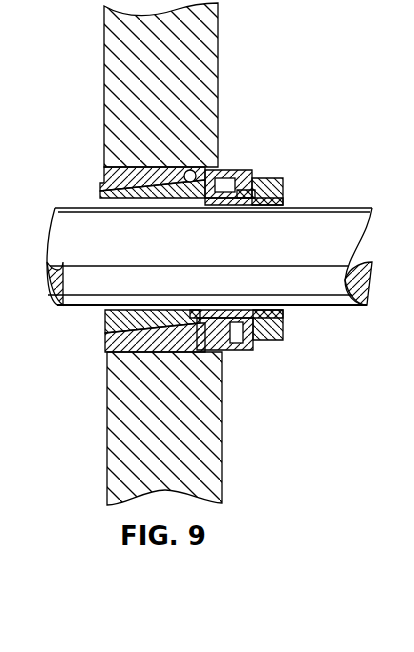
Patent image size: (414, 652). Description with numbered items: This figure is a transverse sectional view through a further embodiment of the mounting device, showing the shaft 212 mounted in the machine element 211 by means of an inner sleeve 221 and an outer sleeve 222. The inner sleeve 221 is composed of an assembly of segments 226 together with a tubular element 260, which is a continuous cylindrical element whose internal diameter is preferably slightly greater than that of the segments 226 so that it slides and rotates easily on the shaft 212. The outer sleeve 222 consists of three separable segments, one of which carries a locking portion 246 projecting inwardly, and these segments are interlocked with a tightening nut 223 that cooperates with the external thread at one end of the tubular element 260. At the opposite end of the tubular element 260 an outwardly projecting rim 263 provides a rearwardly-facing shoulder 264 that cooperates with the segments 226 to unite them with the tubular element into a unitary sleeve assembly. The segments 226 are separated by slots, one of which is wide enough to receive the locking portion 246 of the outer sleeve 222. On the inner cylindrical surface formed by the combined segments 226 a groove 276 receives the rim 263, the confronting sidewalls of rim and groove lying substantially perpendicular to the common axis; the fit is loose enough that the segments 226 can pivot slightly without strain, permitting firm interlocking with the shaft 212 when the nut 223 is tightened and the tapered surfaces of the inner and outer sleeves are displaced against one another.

The machine element 211 is at (213, 110).
The shaft 212 is at (80, 208).
The inner sleeve 221 is at (104, 338).
The outer sleeve 222 is at (127, 165).
The tightening nut 223 is at (268, 176).
The segments 226 is at (148, 309).
The locking portion 246 is at (132, 186).
The tubular element 260 is at (249, 200).
The rim 263 is at (186, 172).
The rearwardly-facing shoulder 264 is at (210, 170).
The groove 276 is at (236, 348).